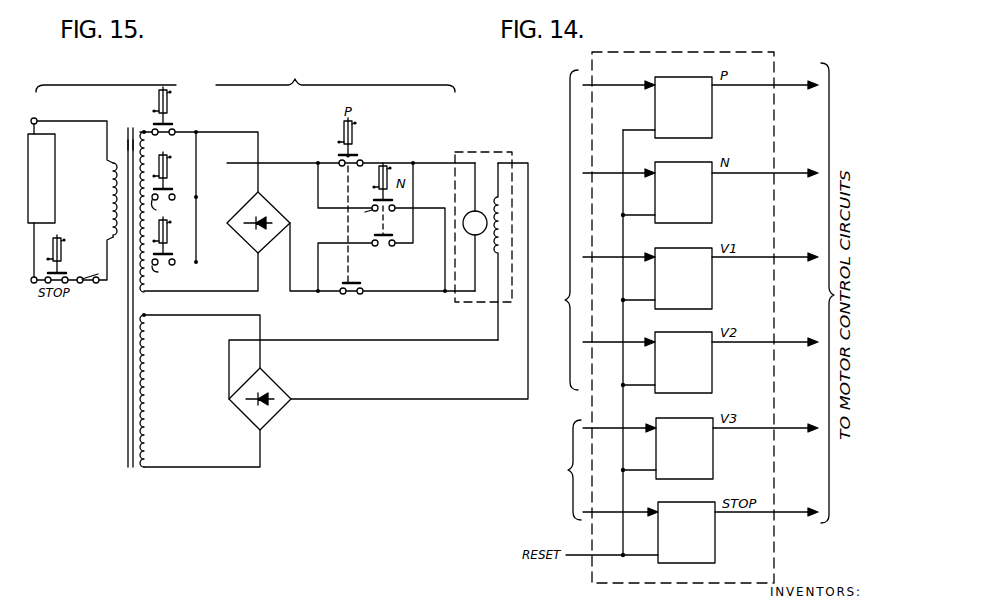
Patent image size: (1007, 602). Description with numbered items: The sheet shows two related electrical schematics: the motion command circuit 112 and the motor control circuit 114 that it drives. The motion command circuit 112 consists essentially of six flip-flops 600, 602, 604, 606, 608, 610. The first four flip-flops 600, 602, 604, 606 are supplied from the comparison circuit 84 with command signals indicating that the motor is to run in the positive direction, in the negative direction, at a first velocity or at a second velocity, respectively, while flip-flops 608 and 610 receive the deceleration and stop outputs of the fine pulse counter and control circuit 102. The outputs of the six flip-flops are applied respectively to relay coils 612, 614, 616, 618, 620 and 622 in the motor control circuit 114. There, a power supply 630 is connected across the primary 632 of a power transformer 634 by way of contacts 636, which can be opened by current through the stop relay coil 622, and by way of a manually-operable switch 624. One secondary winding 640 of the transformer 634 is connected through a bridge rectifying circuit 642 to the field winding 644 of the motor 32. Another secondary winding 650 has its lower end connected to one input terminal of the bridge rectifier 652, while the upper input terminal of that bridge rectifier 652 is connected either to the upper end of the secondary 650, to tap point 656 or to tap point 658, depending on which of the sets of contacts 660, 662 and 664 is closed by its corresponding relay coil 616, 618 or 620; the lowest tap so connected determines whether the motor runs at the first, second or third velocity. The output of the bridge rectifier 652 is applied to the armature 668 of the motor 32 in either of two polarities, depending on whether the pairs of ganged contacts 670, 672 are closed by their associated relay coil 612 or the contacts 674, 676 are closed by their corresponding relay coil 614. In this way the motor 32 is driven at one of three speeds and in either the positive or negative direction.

In FIG. 15, the motor control circuit 114 is at (245, 78).
In FIG. 15, the power supply 630 is at (55, 180).
In FIG. 15, the primary 632 is at (112, 187).
In FIG. 15, the power transformer 634 is at (129, 128).
In FIG. 15, the relay coil 622 is at (62, 238).
In FIG. 15, the contacts 636 is at (63, 274).
In FIG. 15, the manually-operable switch 624 is at (90, 285).
In FIG. 15, the secondary winding 650 is at (146, 289).
In FIG. 15, the secondary winding 640 is at (148, 431).
In FIG. 15, the relay coil 616 is at (171, 92).
In FIG. 15, the contacts 660 is at (171, 125).
In FIG. 15, the relay coil 618 is at (168, 156).
In FIG. 15, the contacts 662 is at (170, 185).
In FIG. 15, the tap point 656 is at (167, 209).
In FIG. 15, the relay coil 620 is at (200, 243).
In FIG. 15, the contacts 664 is at (176, 258).
In FIG. 15, the tap point 658 is at (160, 272).
In FIG. 15, the bridge rectifier 652 is at (258, 222).
In FIG. 15, the bridge rectifying circuit 642 is at (260, 399).
In FIG. 15, the relay coil 612 is at (357, 124).
In FIG. 15, the ganged contacts 670 is at (356, 159).
In FIG. 15, the relay coil 614 is at (392, 169).
In FIG. 15, the contacts 674 is at (366, 212).
In FIG. 15, the contacts 676 is at (382, 247).
In FIG. 15, the ganged contacts 672 is at (360, 285).
In FIG. 15, the armature 668 is at (466, 216).
In FIG. 15, the motor 32 is at (482, 152).
In FIG. 15, the field winding 644 is at (506, 228).
In FIG. 14, the motion command circuit 112 is at (742, 52).
In FIG. 14, the flip-flop 600 is at (699, 72).
In FIG. 14, the flip-flop 602 is at (699, 157).
In FIG. 14, the flip-flop 604 is at (699, 243).
In FIG. 14, the flip-flop 606 is at (699, 327).
In FIG. 14, the flip-flop 608 is at (700, 413).
In FIG. 14, the flip-flop 610 is at (702, 497).
In FIG. 14, the comparison circuit 84 is at (576, 230).
In FIG. 14, the fine pulse counter and control circuit 102 is at (505, 470).